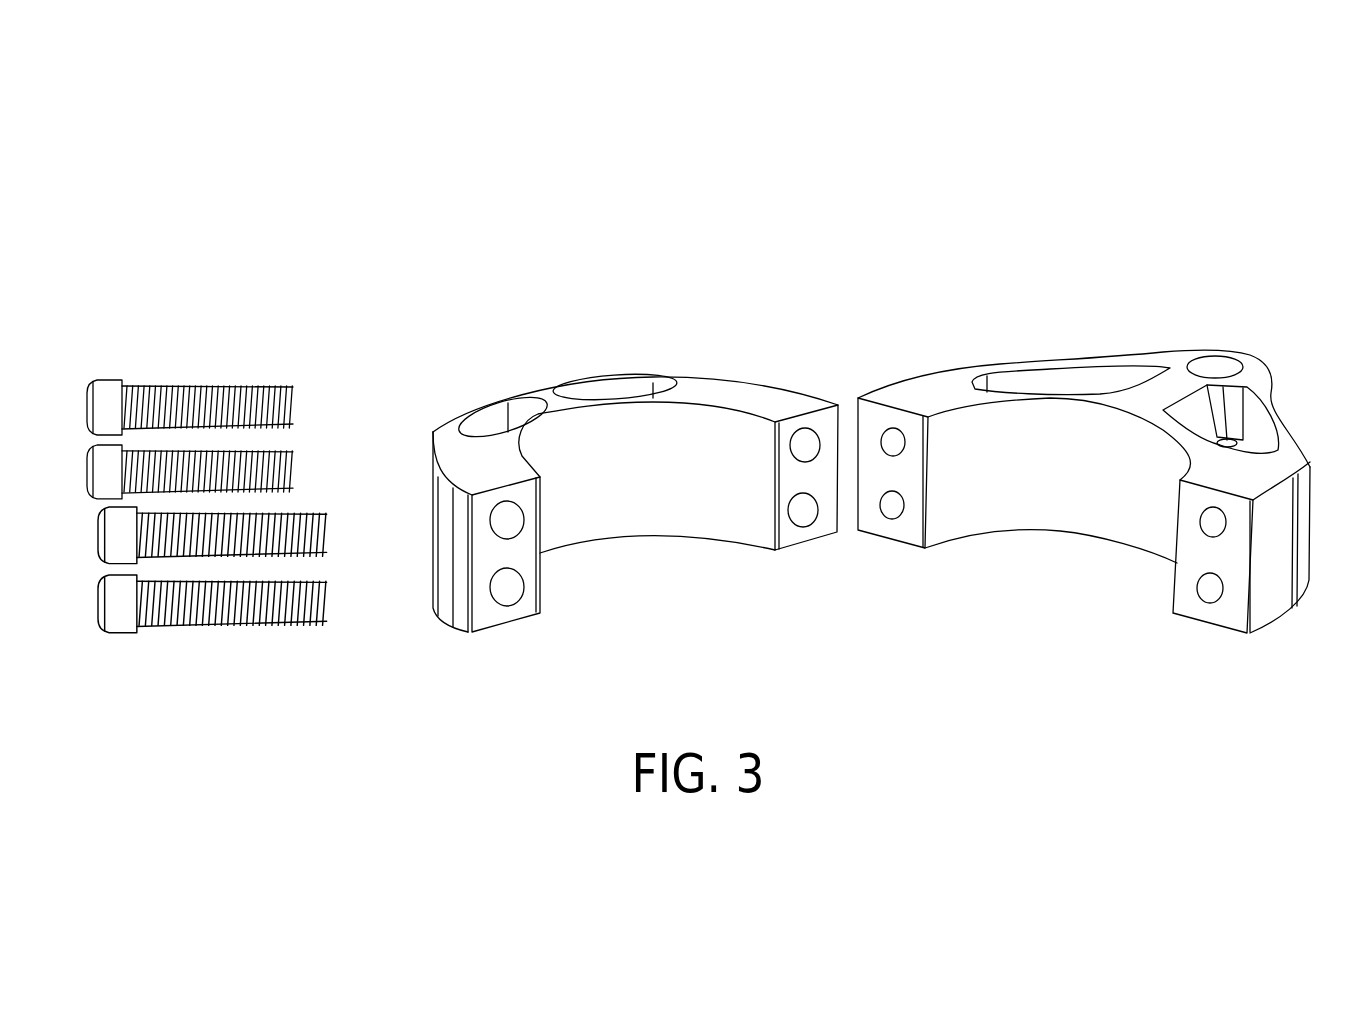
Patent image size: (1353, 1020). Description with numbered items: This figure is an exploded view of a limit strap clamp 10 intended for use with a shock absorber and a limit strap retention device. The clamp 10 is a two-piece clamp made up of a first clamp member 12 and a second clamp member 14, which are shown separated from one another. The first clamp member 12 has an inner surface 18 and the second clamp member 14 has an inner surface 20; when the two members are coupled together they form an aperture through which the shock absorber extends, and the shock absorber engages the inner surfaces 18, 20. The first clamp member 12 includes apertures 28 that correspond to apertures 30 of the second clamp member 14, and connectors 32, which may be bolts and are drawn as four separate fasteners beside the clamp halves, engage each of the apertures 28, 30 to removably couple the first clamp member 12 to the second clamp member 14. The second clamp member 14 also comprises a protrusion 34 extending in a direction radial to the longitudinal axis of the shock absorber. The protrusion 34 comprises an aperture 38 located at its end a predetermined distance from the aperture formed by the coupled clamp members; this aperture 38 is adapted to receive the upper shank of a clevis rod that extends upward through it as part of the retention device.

The limit strap clamp 10 is at (980, 148).
The first clamp member 12 is at (560, 380).
The second clamp member 14 is at (1052, 357).
The inner surface 18 is at (683, 502).
The inner surface 20 is at (1028, 502).
The apertures 28 is at (803, 443).
The apertures 30 is at (893, 442).
The connectors 32 is at (103, 400).
The protrusion 34 is at (1247, 352).
The aperture 38 is at (1214, 366).